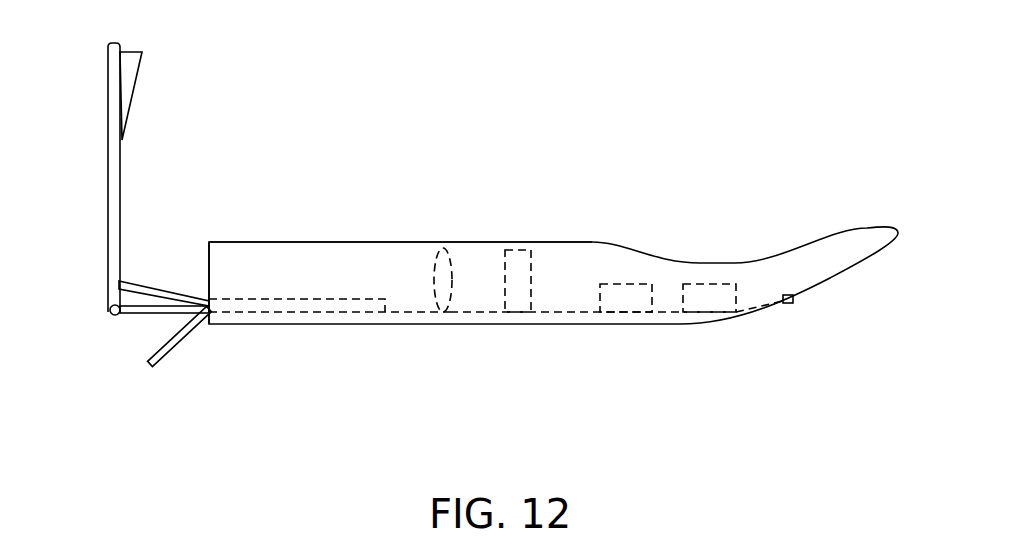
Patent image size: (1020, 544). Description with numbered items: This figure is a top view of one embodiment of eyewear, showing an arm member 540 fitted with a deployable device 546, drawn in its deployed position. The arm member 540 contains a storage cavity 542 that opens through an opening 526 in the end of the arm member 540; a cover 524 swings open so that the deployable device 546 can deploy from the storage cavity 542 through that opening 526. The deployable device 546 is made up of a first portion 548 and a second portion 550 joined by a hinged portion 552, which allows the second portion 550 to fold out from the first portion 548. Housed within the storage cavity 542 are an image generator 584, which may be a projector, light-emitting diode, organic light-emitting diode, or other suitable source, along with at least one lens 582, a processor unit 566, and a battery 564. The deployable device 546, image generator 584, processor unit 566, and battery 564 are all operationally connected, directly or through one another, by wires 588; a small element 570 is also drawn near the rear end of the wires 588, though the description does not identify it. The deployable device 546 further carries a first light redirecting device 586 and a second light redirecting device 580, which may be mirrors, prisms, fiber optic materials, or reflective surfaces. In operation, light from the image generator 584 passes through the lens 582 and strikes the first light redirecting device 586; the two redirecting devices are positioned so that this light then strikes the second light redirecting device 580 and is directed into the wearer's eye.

The second portion 550 is at (108, 155).
The second light redirecting device 580 is at (133, 99).
The hinged portion 552 is at (114, 318).
The first light redirecting device 586 is at (185, 297).
The cover 524 is at (160, 372).
The opening 526 is at (213, 247).
The arm member 540 is at (279, 242).
The storage cavity 542 is at (358, 258).
The deployable device 546 is at (312, 299).
The first portion 548 is at (300, 313).
The wires 588 is at (488, 314).
The lens 582 is at (440, 250).
The image generator 584 is at (518, 250).
The processor unit 566 is at (627, 314).
The battery 564 is at (705, 314).
The connector 570 is at (790, 305).